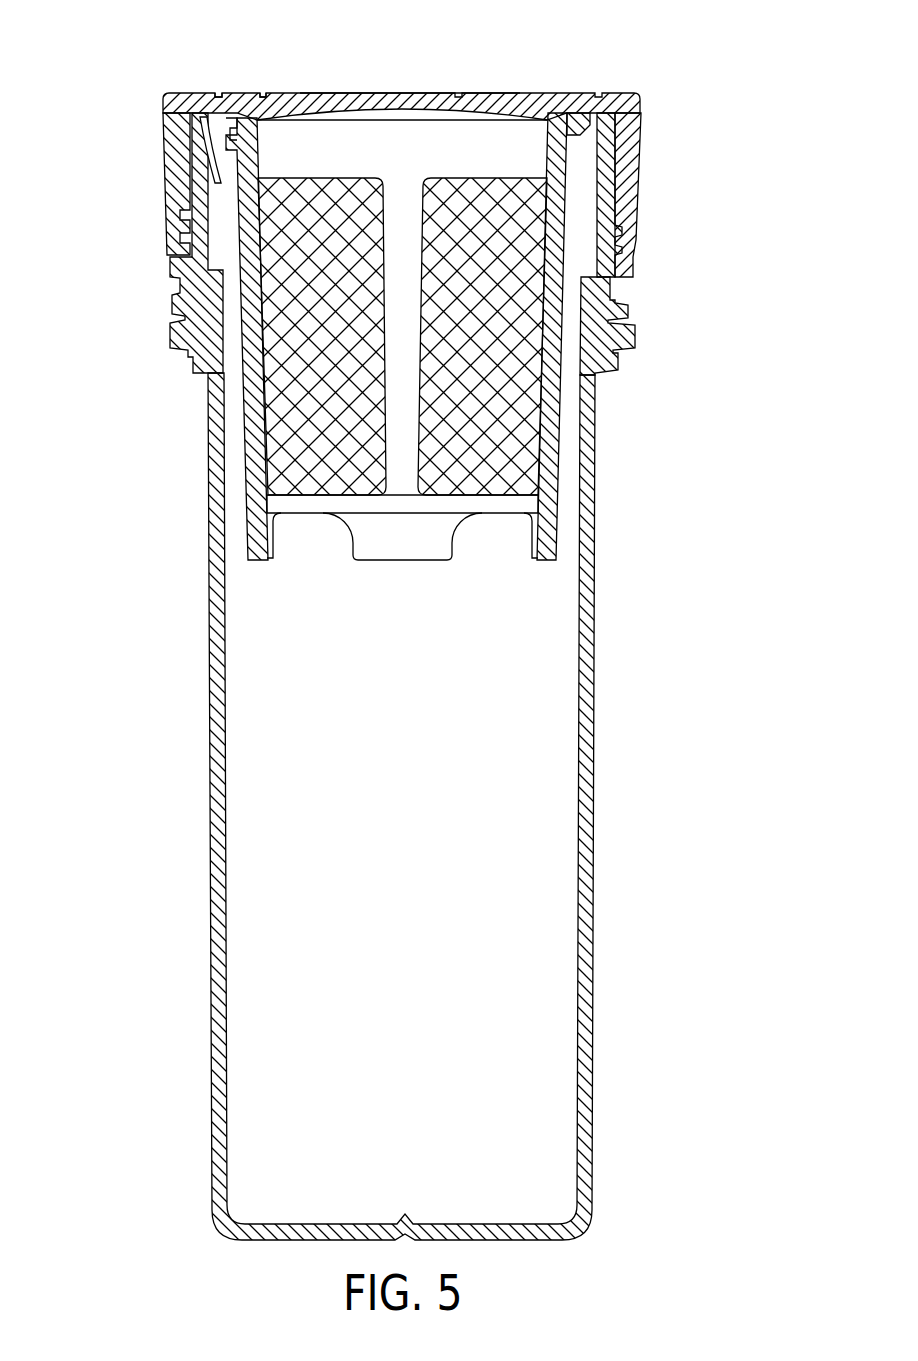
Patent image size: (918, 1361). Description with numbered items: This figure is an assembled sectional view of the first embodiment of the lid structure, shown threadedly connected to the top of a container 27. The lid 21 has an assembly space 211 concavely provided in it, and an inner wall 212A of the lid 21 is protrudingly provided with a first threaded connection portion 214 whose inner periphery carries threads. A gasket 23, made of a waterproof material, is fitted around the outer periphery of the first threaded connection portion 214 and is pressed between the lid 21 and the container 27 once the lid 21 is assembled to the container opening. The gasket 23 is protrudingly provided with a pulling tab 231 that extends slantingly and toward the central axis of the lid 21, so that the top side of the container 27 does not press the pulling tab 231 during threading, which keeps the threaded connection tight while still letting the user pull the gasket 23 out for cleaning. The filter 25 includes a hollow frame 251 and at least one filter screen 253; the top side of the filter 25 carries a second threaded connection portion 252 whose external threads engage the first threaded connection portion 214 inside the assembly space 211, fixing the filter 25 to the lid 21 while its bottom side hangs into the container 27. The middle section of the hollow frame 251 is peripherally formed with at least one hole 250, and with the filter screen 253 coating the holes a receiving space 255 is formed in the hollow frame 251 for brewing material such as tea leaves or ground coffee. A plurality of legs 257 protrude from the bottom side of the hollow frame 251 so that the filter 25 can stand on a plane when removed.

The lid 21 is at (628, 123).
The assembly space 211 is at (578, 208).
The inner wall 212A is at (412, 93).
The first threaded connection portion 214 is at (226, 118).
The gasket 23 is at (195, 117).
The pulling tab 231 is at (212, 160).
The filter 25 is at (693, 282).
The hole 250 is at (272, 426).
The hollow frame 251 is at (557, 305).
The second threaded connection portion 252 is at (241, 154).
The filter screen 253 is at (490, 407).
The receiving space 255 is at (468, 208).
The legs 257 is at (403, 540).
The container 27 is at (585, 688).